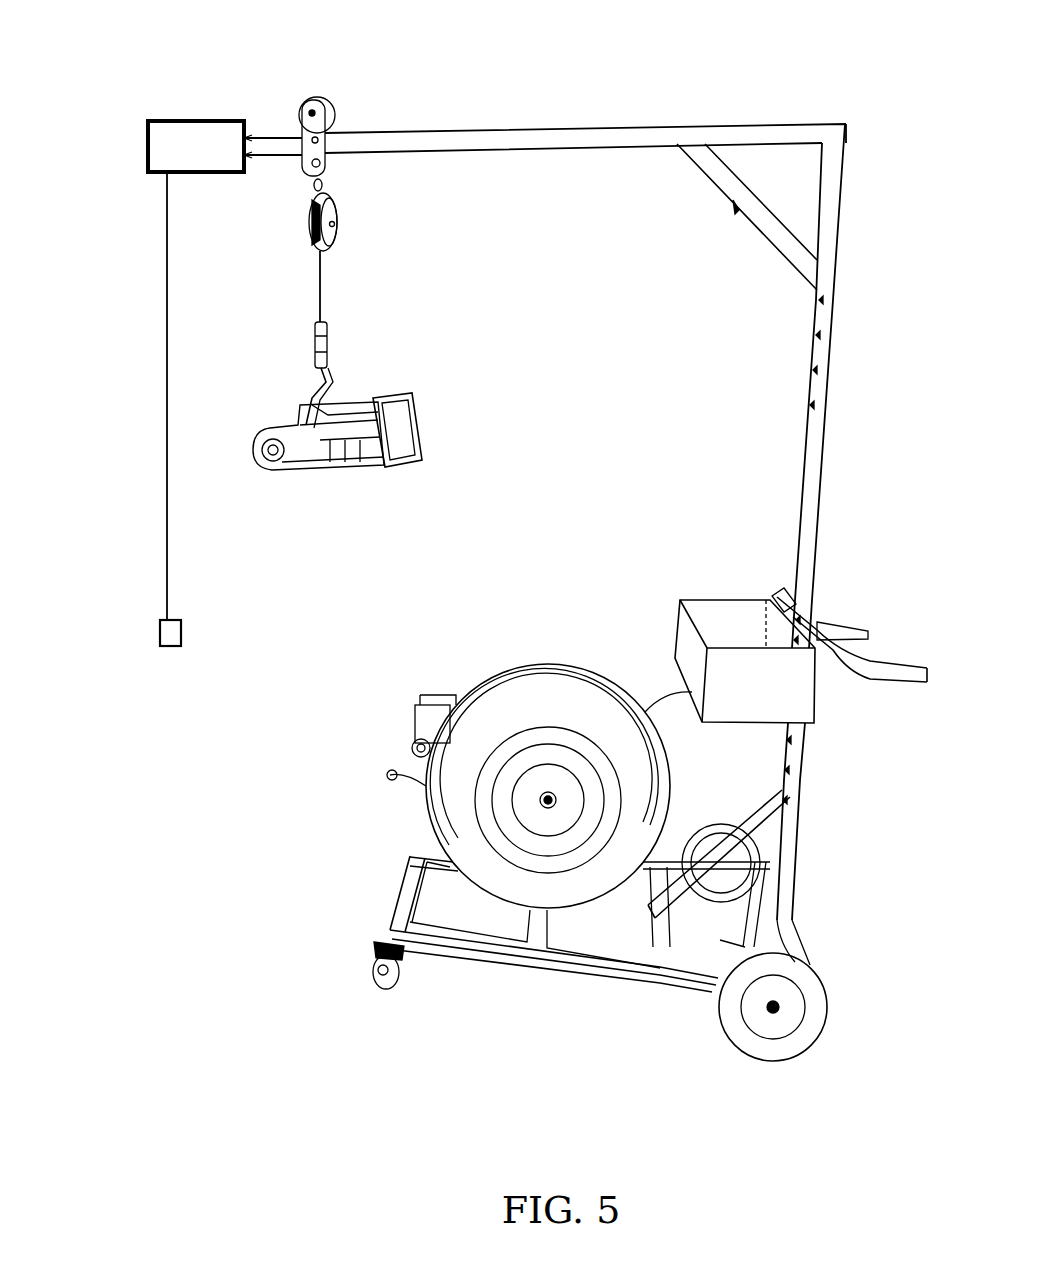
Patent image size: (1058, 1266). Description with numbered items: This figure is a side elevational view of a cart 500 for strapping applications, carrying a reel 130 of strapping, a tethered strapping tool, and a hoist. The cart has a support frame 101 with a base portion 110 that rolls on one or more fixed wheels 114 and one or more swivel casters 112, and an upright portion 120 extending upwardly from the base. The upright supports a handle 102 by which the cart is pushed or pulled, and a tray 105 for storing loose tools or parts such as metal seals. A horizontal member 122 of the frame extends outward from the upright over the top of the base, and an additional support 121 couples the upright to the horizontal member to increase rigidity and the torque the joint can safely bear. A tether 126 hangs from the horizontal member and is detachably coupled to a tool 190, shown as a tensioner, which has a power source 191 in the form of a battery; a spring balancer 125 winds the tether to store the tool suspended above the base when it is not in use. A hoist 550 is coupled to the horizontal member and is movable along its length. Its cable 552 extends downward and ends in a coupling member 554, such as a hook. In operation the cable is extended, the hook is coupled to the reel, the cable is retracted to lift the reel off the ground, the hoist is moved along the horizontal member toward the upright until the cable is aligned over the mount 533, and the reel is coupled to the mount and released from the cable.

The cart 500 is at (858, 96).
The hoist 550 is at (176, 121).
The cable 552 is at (166, 518).
The coupling member 554 is at (172, 627).
The horizontal member 122 is at (550, 128).
The support 121 is at (710, 180).
The upright portion 120 is at (829, 430).
The spring balancer 125 is at (343, 228).
The tether 126 is at (322, 290).
The tool 190 is at (338, 473).
The power source 191 is at (430, 427).
The tray 105 is at (705, 598).
The handle 102 is at (903, 662).
The reel 130 is at (427, 791).
The mount 533 is at (548, 798).
The base portion 110 is at (563, 977).
The support frame 101 is at (800, 858).
The swivel caster 112 is at (390, 990).
The fixed wheel 114 is at (773, 1062).